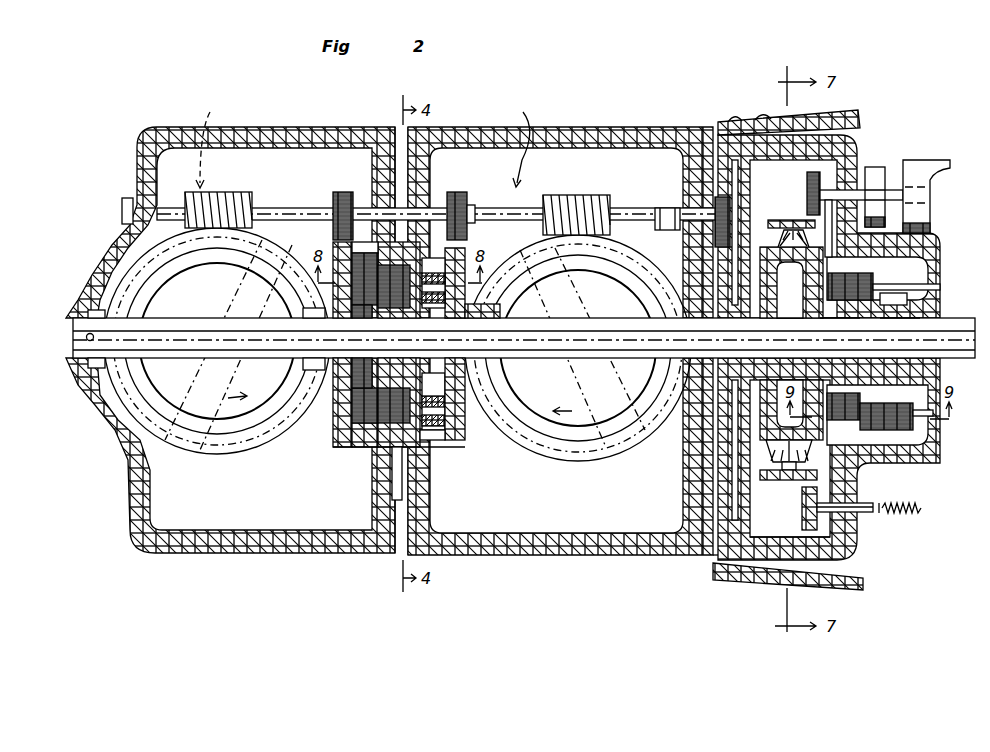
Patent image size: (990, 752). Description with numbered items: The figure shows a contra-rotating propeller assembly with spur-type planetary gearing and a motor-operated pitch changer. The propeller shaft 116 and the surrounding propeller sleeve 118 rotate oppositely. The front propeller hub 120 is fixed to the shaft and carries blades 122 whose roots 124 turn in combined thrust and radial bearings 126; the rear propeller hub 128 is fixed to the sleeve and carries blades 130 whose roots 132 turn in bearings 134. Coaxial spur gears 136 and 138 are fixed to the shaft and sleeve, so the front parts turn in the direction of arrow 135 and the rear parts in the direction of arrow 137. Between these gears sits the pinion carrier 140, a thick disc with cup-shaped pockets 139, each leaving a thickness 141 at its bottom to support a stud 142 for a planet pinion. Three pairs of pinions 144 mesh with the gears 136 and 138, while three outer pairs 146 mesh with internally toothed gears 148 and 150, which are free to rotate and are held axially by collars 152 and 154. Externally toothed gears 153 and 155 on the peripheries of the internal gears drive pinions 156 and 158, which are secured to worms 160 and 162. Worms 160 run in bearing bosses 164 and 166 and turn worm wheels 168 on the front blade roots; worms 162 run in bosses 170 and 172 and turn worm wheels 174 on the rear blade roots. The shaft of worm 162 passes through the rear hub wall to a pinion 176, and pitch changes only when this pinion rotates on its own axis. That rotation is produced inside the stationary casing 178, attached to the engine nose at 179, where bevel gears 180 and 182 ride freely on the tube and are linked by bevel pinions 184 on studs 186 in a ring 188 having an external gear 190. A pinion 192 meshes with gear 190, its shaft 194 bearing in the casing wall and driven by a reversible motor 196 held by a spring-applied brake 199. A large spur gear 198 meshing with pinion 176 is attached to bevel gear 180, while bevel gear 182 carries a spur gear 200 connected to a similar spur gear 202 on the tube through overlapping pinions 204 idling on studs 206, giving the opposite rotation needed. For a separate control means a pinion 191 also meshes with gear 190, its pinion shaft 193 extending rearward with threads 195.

The propeller shaft 116 is at (78, 322).
The propeller sleeve 118 is at (947, 326).
The front propeller hub 120 is at (316, 127).
The blades 122 is at (206, 366).
The roots 124 is at (158, 278).
The combined thrust and radial bearings 126 is at (215, 446).
The rear propeller hub 128 is at (635, 127).
The blades 130 is at (574, 296).
The roots 132 is at (647, 386).
The combined thrust and radial bearings 134 is at (556, 440).
The arrow 135 is at (218, 141).
The spur gear 136 is at (304, 335).
The arrow 137 is at (525, 140).
The spur gear 138 is at (440, 310).
The cup-shaped pockets 139 is at (431, 207).
The pinion carrier 140 is at (408, 448).
The thickness 141 is at (414, 302).
The stud 142 is at (455, 428).
The pairs of pinions 144 is at (355, 262).
The pairs of pinions 146 is at (352, 410).
The internally toothed gear 148 is at (386, 262).
The internally toothed gear 150 is at (438, 440).
The collar 152 is at (301, 313).
The externally toothed gear 153 is at (339, 447).
The collar 154 is at (498, 314).
The externally toothed gear 155 is at (462, 441).
The pinions 156 is at (343, 192).
The pinions 158 is at (471, 208).
The worms 160 is at (219, 193).
The worms 162 is at (596, 201).
The bearing boss 164 is at (127, 198).
The bearing boss 166 is at (381, 128).
The worm wheels 168 is at (246, 445).
The bearing boss 170 is at (468, 196).
The bearing boss 172 is at (657, 212).
The worm wheels 174 is at (582, 450).
The pinion 176 is at (747, 184).
The stationary casing 178 is at (852, 152).
The attachment point 179 is at (745, 580).
The bevel gear 180 is at (791, 282).
The bevel gear 182 is at (812, 297).
The bevel pinions 184 is at (791, 425).
The studs 186 is at (786, 222).
The ring 188 is at (766, 480).
The external gear 190 is at (818, 491).
The pinion 191 is at (801, 522).
The pinion 192 is at (806, 178).
The pinion shaft 193 is at (862, 512).
The shaft 194 is at (829, 226).
The threads 195 is at (906, 513).
The reversible motor 196 is at (935, 222).
The large spur gear 198 is at (718, 460).
The brake 199 is at (888, 172).
The spur gear 200 is at (838, 322).
The spur gear 202 is at (897, 322).
The overlapping pinions 204 is at (873, 278).
The studs 206 is at (941, 288).